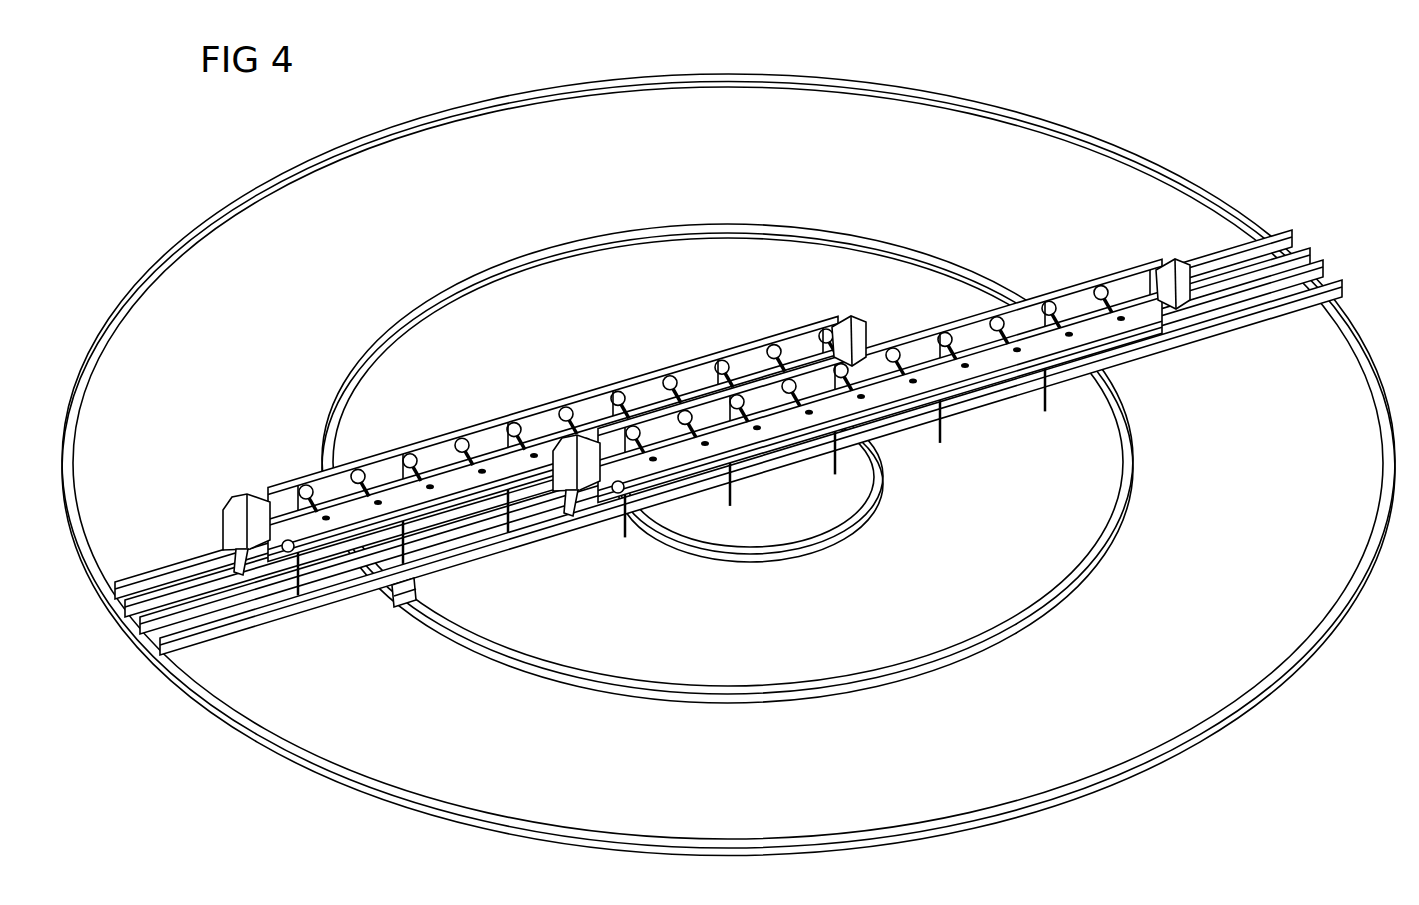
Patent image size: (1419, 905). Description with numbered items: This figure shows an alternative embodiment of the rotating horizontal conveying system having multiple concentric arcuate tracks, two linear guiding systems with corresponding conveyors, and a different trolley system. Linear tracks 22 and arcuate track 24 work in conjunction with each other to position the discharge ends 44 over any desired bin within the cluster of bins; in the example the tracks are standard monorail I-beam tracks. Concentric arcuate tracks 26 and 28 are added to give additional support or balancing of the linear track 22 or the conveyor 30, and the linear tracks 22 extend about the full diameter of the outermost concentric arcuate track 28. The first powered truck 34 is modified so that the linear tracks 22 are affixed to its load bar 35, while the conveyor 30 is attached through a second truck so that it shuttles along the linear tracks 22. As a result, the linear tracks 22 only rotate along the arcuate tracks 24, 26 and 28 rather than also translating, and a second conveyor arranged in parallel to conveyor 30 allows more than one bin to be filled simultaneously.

The linear tracks 22 is at (1292, 230).
The arcuate track 24 is at (770, 550).
The concentric arcuate track 26 is at (845, 688).
The outermost concentric arcuate track 28 is at (927, 831).
The conveyor 30 is at (588, 400).
The first powered truck 34 is at (395, 600).
The load bar 35 is at (400, 585).
The discharge ends 44 is at (227, 556).